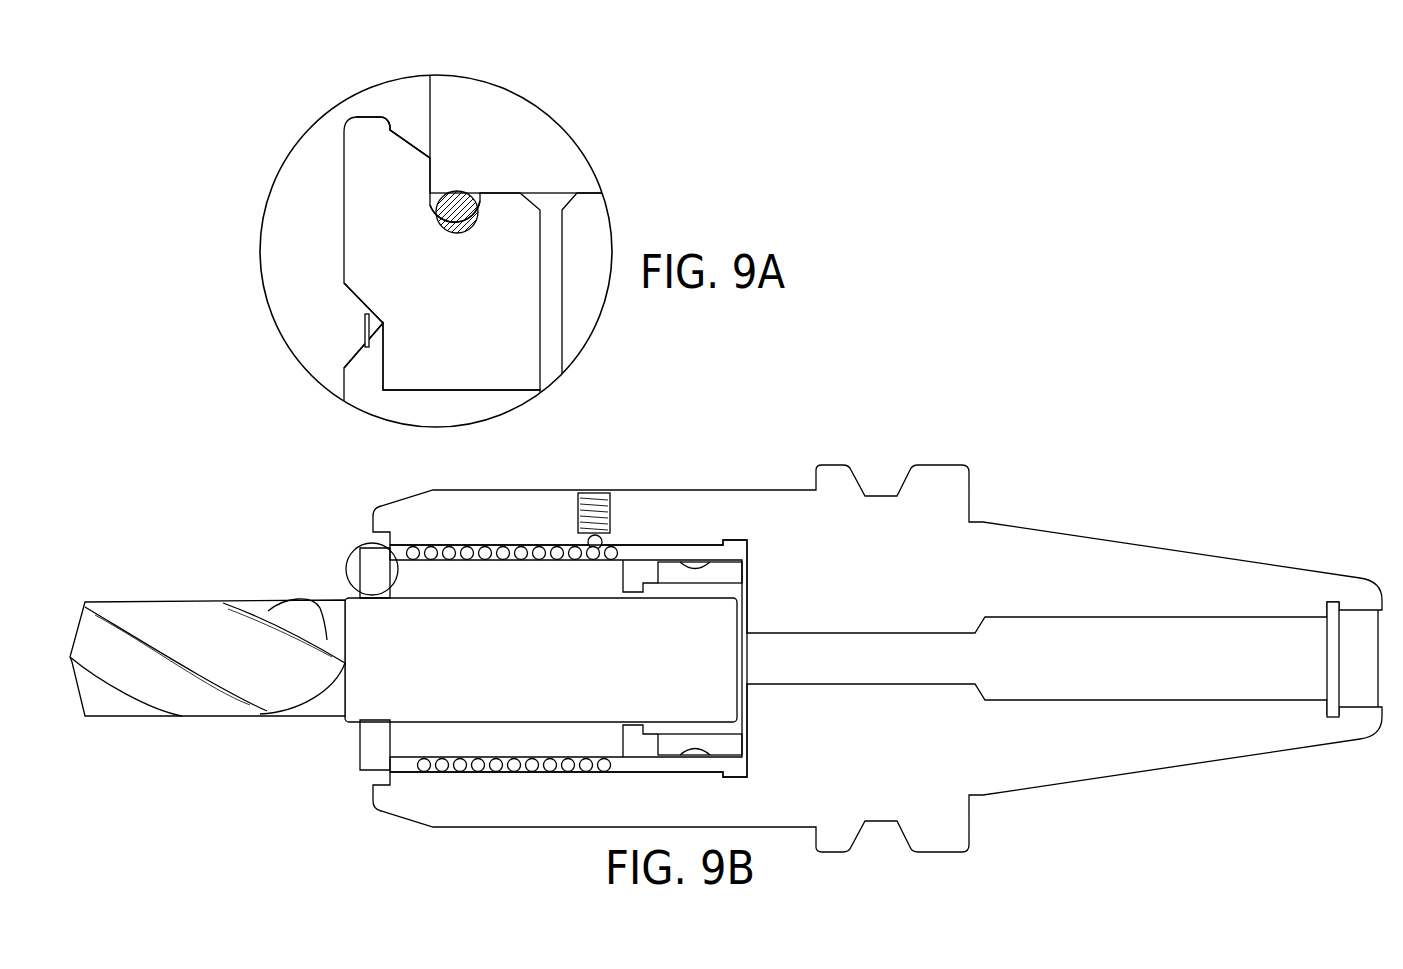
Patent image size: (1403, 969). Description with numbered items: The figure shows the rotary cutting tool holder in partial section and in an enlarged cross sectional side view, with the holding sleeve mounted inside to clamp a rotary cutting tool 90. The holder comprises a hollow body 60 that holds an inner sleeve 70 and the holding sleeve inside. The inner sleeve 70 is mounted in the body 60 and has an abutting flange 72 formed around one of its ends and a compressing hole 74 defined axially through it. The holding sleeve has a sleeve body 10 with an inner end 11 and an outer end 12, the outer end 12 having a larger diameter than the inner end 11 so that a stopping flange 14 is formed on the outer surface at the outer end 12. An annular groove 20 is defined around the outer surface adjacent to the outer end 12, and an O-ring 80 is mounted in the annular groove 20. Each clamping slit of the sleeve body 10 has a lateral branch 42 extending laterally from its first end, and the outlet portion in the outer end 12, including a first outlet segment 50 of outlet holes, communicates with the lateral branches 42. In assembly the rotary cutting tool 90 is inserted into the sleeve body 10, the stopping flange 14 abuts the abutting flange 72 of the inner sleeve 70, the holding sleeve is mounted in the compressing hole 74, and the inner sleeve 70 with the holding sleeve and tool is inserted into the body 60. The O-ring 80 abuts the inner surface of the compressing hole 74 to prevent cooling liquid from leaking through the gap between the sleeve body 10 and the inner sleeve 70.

In FIG. 9A, the sleeve body 10 is at (334, 137).
In FIG. 9A, the outer end 12 is at (343, 203).
In FIG. 9A, the stopping flange 14 is at (368, 116).
In FIG. 9A, the annular groove 20 is at (434, 216).
In FIG. 9A, the lateral branch 42 is at (547, 253).
In FIG. 9A, the first outlet segment 50 is at (340, 322).
In FIG. 9A, the O-ring 80 is at (464, 206).
In FIG. 9B, the body 60 is at (930, 490).
In FIG. 9B, the inner sleeve 70 is at (435, 783).
In FIG. 9B, the abutting flange 72 is at (373, 778).
In FIG. 9B, the compressing hole 74 is at (470, 742).
In FIG. 9B, the inner end 11 is at (742, 744).
In FIG. 9B, the rotary cutting tool 90 is at (186, 617).